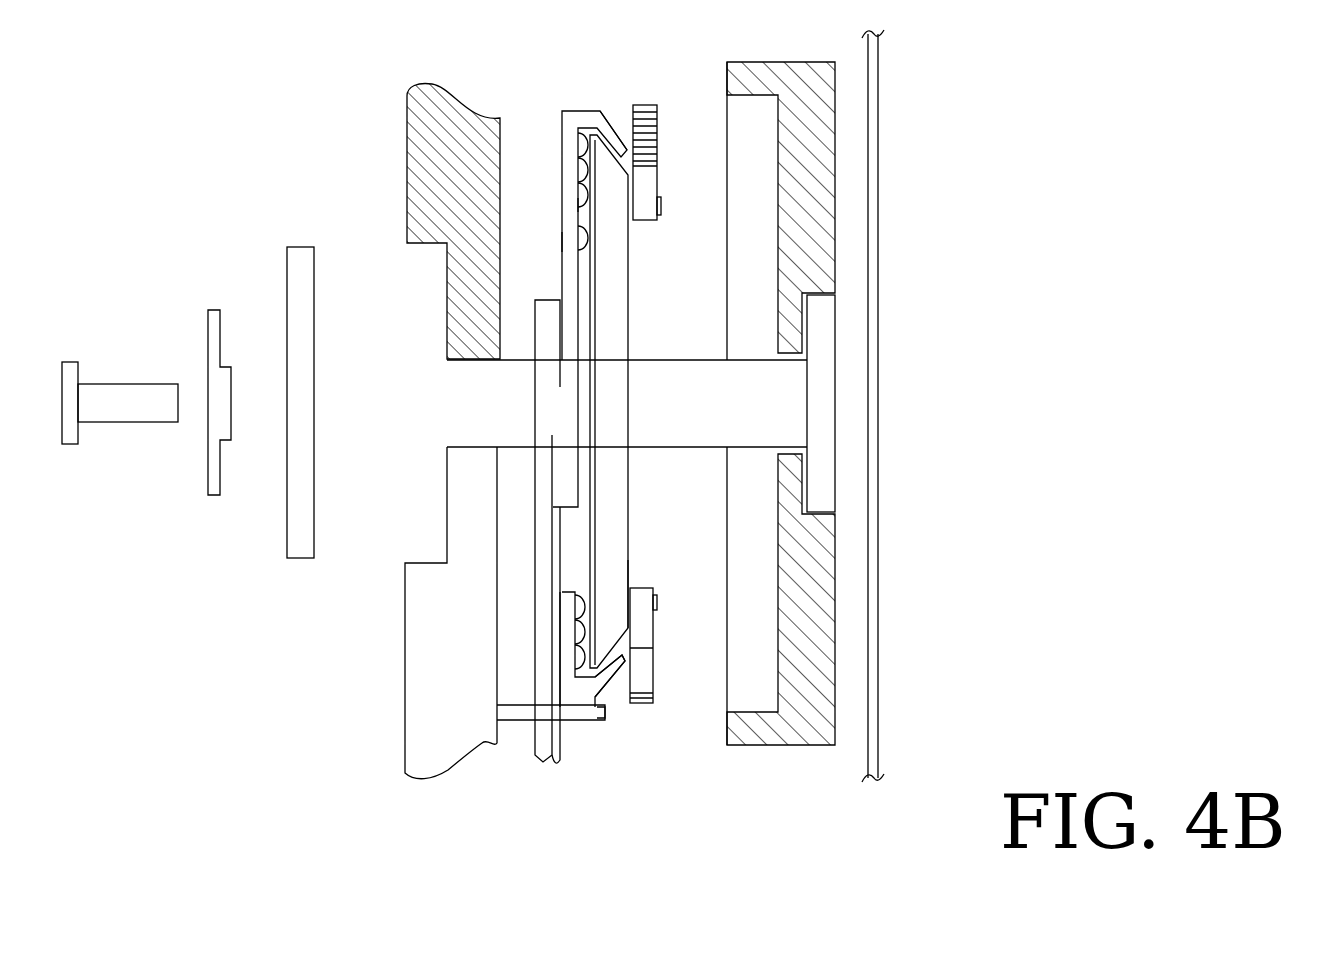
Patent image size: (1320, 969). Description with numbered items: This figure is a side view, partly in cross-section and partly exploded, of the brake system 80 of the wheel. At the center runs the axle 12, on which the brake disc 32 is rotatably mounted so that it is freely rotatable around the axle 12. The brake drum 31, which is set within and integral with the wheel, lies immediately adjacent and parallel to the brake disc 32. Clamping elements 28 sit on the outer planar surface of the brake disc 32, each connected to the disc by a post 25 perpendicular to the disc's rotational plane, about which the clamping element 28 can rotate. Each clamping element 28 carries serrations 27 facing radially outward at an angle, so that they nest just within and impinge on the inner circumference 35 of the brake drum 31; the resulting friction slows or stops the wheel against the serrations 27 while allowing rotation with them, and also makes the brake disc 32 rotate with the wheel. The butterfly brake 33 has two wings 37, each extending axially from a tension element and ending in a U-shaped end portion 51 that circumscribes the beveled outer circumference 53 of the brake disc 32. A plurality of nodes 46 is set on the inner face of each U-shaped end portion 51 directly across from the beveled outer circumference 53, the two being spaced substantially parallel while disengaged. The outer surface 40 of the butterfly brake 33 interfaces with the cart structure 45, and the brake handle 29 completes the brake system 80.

The brake system 80 is at (172, 90).
The axle 12 is at (468, 405).
The cart structure 45 is at (405, 143).
The brake handle 29 is at (535, 745).
The wing 37 is at (562, 128).
The U-shaped end portion 51 is at (584, 118).
The nodes 46 is at (577, 172).
The outer surface 40 is at (577, 205).
The butterfly brake 33 is at (562, 242).
The brake disc 32 is at (628, 324).
The post 25 is at (628, 587).
The serrations 27 is at (657, 136).
The clamping elements 28 is at (655, 583).
The beveled outer circumference 53 is at (620, 648).
The brake drum 31 is at (750, 62).
The inner circumference 35 is at (737, 690).